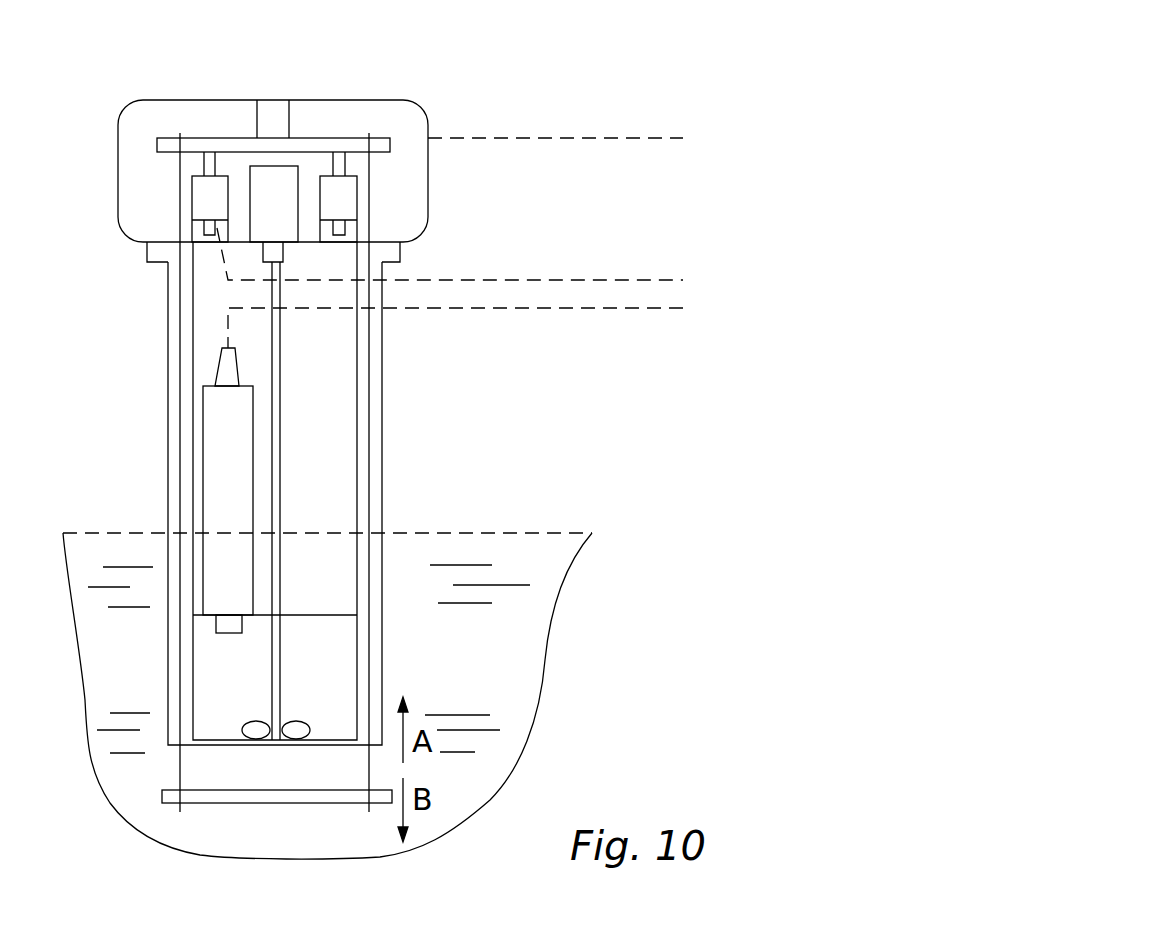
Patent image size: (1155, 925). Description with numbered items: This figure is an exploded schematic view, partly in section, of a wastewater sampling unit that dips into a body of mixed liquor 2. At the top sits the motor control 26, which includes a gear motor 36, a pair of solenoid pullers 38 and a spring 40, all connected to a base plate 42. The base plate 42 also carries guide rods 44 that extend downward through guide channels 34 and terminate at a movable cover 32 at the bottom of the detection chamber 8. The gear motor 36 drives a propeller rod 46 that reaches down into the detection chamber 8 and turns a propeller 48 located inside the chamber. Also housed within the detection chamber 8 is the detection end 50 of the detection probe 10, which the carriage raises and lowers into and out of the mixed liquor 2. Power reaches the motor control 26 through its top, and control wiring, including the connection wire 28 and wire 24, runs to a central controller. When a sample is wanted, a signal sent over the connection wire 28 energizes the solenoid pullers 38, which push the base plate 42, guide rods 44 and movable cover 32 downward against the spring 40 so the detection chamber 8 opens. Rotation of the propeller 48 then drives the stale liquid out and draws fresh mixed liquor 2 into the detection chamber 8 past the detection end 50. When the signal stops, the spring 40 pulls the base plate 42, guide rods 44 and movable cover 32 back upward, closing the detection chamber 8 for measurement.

The mixed liquor 2 is at (477, 673).
The detection chamber 8 is at (242, 692).
The detection probe 10 is at (203, 440).
The conductor to central controller 24 is at (593, 310).
The motor control 26 is at (422, 90).
The connection wire 28 is at (572, 278).
The movable cover 32 is at (245, 803).
The guide channels 34 is at (168, 465).
The gear motor 36 is at (293, 215).
The solenoid pullers 38 is at (223, 214).
The spring 40 is at (290, 120).
The base plate 42 is at (233, 138).
The guide rods 44 is at (180, 340).
The propeller rod 46 is at (280, 418).
The propeller 48 is at (308, 722).
The detection end 50 is at (216, 622).